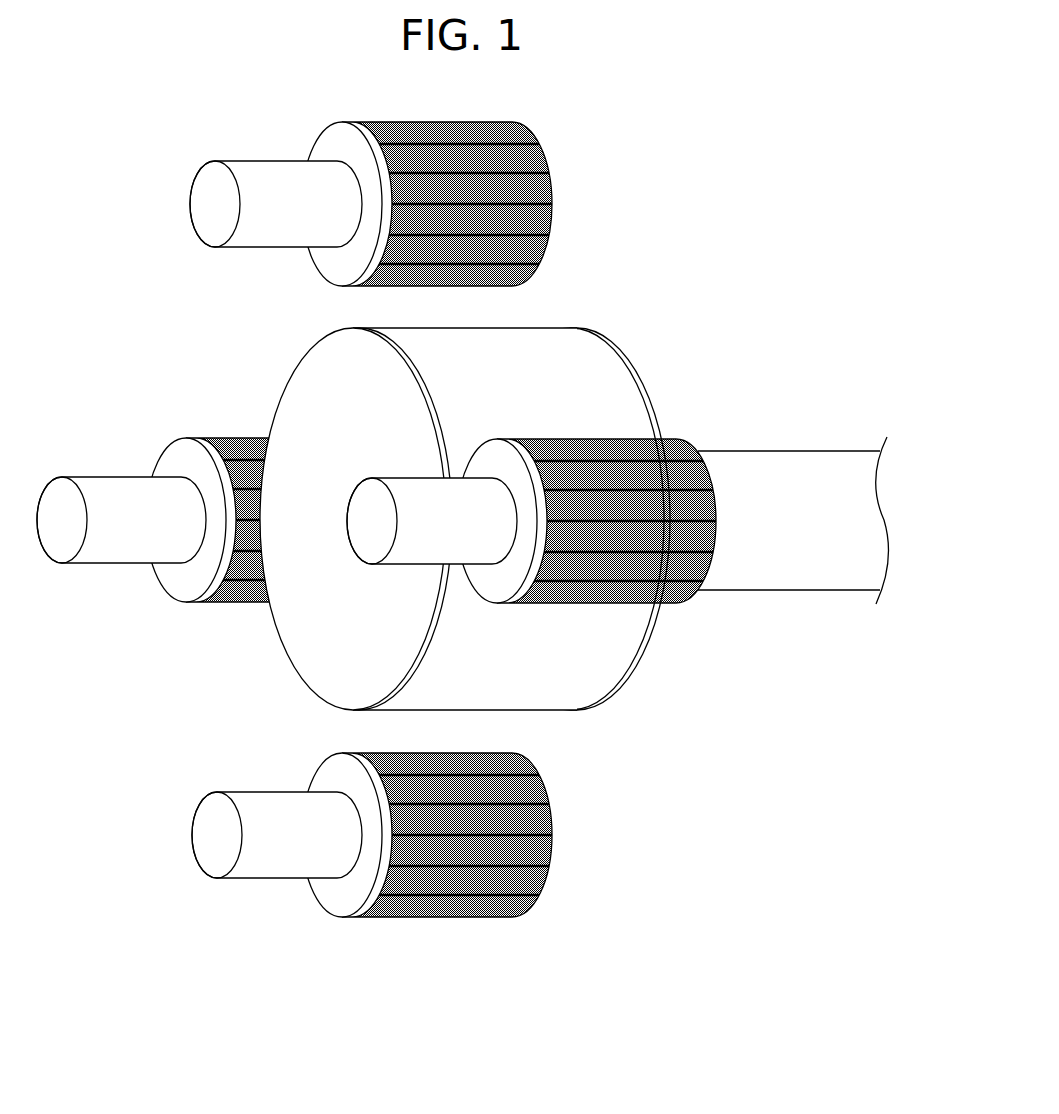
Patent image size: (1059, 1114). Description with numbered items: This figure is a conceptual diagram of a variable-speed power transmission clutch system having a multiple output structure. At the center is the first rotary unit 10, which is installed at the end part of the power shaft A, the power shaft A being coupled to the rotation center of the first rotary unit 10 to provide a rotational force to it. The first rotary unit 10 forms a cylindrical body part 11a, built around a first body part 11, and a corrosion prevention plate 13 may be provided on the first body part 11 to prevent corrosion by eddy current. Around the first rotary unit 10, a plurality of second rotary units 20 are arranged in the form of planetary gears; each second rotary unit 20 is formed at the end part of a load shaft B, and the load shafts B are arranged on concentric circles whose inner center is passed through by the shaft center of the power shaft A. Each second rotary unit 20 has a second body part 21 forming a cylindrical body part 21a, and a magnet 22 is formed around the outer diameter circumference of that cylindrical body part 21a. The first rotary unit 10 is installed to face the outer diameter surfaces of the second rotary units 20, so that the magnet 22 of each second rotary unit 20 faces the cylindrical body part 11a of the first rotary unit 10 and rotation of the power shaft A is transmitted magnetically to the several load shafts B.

The first rotary unit 10 is at (386, 501).
The first body part 11 is at (278, 517).
The cylindrical body part 11a is at (335, 380).
The corrosion prevention plate 13 is at (567, 378).
The second rotary unit 20 is at (414, 847).
The second body part 21 is at (281, 817).
The cylindrical body part 21a is at (327, 775).
The magnet 22 is at (523, 848).
The power shaft A is at (826, 483).
The load shaft B is at (262, 850).